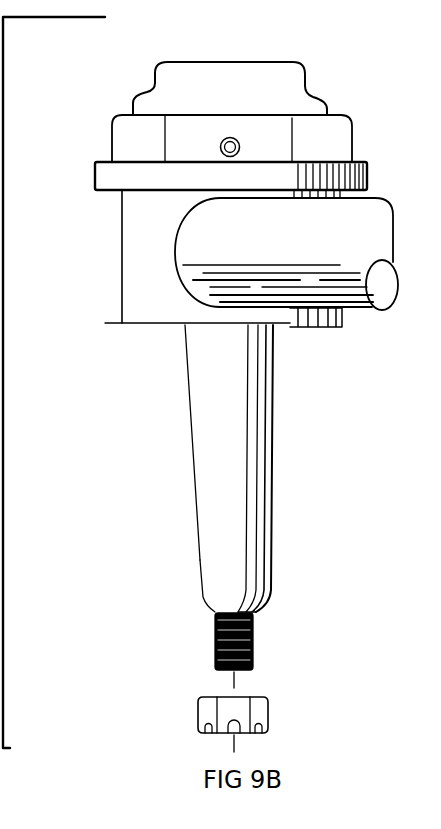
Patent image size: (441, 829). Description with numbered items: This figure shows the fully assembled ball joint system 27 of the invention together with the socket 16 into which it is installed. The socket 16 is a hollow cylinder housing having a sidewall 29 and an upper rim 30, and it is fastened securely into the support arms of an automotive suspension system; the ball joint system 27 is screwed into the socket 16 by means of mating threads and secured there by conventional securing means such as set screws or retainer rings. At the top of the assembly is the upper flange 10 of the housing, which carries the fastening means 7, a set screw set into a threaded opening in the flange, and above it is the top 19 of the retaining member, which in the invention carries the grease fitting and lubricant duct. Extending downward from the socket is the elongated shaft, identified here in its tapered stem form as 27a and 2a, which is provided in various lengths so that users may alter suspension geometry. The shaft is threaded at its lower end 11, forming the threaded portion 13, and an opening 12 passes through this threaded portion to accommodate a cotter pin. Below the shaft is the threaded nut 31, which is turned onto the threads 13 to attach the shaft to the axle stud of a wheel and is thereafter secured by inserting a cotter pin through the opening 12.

The fastening means 7 is at (222, 140).
The upper flange 10 is at (128, 128).
The upper rim 30 is at (105, 173).
The socket 16 is at (102, 233).
The top 19 is at (288, 80).
The sidewall 29 is at (153, 300).
The ball joint system 27 is at (183, 328).
The stem taper 27a is at (167, 405).
The shaft 2a is at (213, 515).
The threaded portion 13 is at (215, 627).
The opening 12 is at (215, 647).
The lower end 11 is at (253, 612).
The nut 31 is at (198, 710).